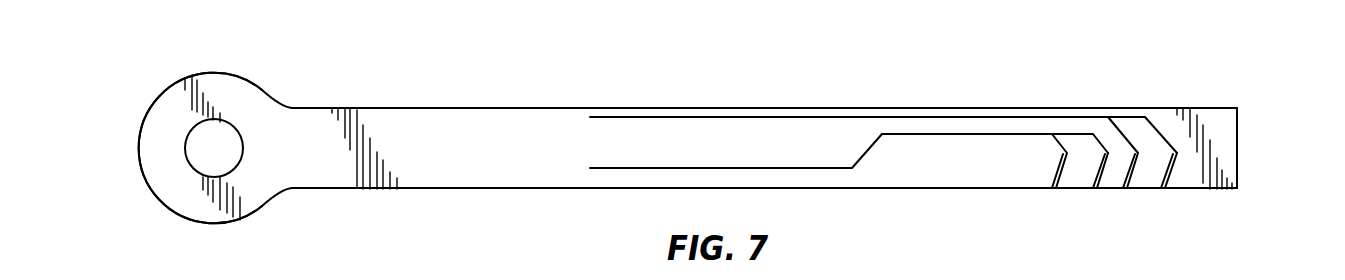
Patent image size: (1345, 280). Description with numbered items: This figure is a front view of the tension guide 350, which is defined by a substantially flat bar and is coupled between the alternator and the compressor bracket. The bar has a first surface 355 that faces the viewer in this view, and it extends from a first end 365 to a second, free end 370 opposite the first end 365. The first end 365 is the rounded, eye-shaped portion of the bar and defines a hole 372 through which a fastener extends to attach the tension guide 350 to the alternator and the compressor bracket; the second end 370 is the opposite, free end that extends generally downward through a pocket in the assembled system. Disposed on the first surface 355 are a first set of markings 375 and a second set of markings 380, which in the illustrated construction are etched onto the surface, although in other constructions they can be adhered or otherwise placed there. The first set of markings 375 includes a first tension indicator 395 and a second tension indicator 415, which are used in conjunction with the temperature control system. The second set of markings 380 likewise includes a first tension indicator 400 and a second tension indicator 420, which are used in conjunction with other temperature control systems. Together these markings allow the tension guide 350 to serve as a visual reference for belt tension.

The tension guide 350 is at (498, 81).
The first surface 355 is at (1218, 138).
The first end 365 is at (138, 149).
The second, free end 370 is at (1238, 155).
The hole 372 is at (225, 128).
The first set of markings 375 is at (848, 117).
The second set of markings 380 is at (923, 135).
The first tension indicator 395 is at (1168, 172).
The first tension indicator 400 is at (1102, 172).
The second tension indicator 415 is at (1133, 172).
The second tension indicator 420 is at (1058, 172).